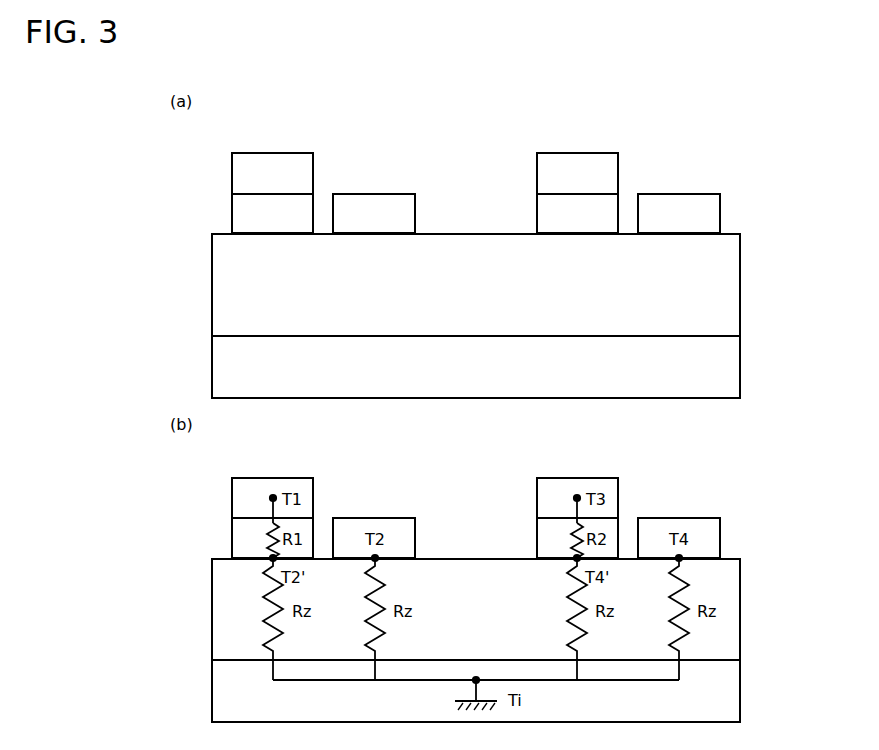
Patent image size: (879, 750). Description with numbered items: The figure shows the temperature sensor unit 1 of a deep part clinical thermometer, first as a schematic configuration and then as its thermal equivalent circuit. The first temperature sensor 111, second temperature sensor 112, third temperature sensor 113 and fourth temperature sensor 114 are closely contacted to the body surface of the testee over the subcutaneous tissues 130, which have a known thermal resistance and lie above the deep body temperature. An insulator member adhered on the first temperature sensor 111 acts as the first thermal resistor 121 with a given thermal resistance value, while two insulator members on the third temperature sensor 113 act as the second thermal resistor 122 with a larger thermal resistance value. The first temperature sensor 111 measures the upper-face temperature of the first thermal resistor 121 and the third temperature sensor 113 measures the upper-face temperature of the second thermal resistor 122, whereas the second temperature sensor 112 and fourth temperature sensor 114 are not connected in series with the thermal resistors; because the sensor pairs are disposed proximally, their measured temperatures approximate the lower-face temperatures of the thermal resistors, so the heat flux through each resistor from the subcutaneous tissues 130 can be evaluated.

The temperature sensor unit 1 is at (789, 126).
The first temperature sensor 111 is at (284, 153).
The second temperature sensor 112 is at (386, 194).
The third temperature sensor 113 is at (588, 153).
The fourth temperature sensor 114 is at (691, 194).
The first thermal resistor 121 is at (232, 210).
The second thermal resistor 122 is at (537, 210).
The subcutaneous tissues 130 is at (740, 276).